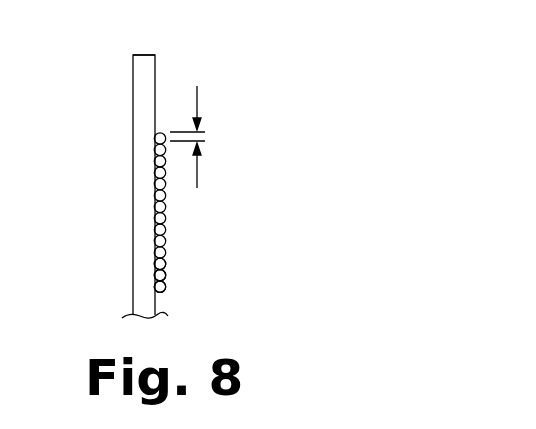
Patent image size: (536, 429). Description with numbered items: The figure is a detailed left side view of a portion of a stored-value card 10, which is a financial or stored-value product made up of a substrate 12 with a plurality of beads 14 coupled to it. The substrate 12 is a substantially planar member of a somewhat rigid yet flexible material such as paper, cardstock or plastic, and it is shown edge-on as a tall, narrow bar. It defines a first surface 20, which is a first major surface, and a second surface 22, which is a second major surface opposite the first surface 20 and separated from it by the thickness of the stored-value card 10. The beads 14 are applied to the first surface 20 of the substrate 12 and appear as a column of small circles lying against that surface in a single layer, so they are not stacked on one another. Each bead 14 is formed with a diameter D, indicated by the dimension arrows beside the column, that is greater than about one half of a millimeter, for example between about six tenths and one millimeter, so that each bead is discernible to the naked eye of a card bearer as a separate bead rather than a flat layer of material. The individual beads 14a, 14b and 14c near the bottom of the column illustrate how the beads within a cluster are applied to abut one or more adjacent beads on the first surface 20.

The stored-value card 10 is at (107, 68).
The substrate 12 is at (133, 160).
The beads 14 is at (168, 205).
The individual bead 14a is at (166, 288).
The individual bead 14b is at (166, 278).
The individual bead 14c is at (166, 261).
The first surface 20 is at (156, 67).
The second surface 22 is at (133, 229).
The diameter D is at (188, 125).